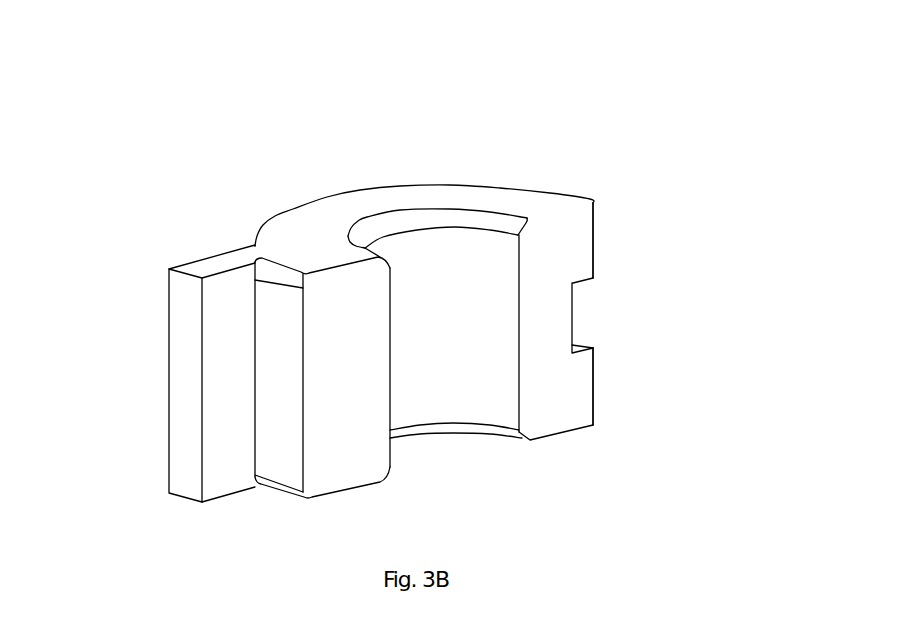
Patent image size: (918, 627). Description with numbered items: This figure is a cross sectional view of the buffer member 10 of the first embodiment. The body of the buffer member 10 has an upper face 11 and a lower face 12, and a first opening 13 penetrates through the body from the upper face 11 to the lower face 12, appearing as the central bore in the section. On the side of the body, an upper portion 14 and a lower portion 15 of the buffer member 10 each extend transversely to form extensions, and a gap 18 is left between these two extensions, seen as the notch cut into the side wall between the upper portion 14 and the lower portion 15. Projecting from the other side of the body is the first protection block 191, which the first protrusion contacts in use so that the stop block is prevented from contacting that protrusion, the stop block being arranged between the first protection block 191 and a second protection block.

The buffer member 10 is at (265, 185).
The upper face 11 is at (500, 198).
The lower face 12 is at (517, 440).
The first opening 13 is at (440, 280).
The upper portion 14 is at (563, 241).
The lower portion 15 is at (565, 402).
The gap 18 is at (583, 317).
The first protection block 191 is at (183, 374).